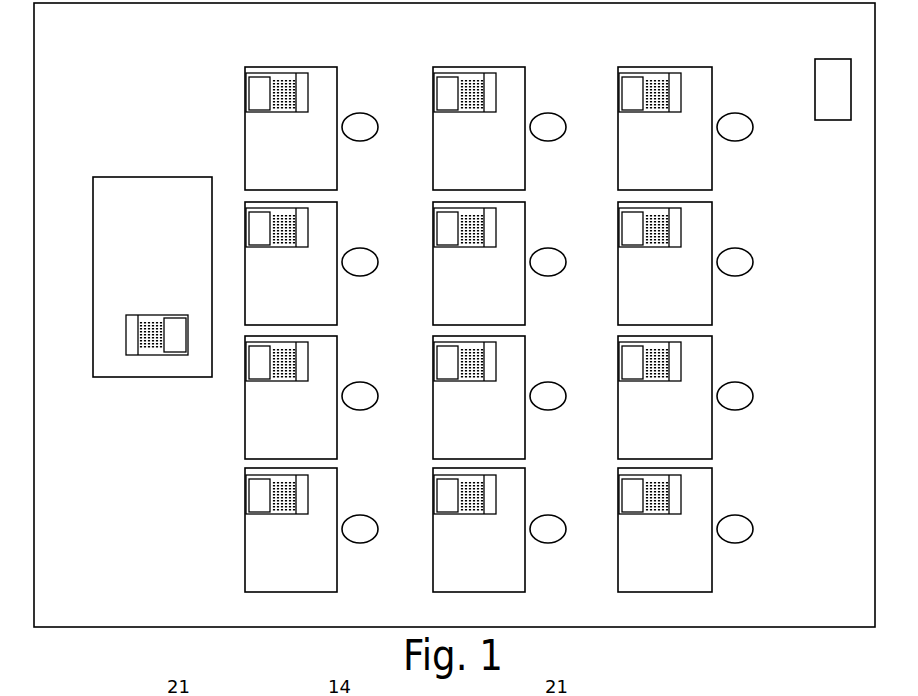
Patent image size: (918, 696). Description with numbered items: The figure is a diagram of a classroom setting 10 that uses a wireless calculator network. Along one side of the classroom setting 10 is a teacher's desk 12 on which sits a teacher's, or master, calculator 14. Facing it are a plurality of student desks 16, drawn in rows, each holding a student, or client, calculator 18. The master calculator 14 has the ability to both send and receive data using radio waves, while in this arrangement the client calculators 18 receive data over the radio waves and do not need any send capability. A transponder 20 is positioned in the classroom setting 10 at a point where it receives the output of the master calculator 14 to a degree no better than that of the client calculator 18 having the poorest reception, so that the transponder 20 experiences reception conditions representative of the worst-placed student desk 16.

The classroom setting 10 is at (88, 39).
The teacher's desk 12 is at (133, 177).
The teacher's (master) calculator 14 is at (163, 315).
The student desks 16 is at (339, 80).
The student (client) calculators 18 is at (285, 72).
The transponder 20 is at (842, 121).